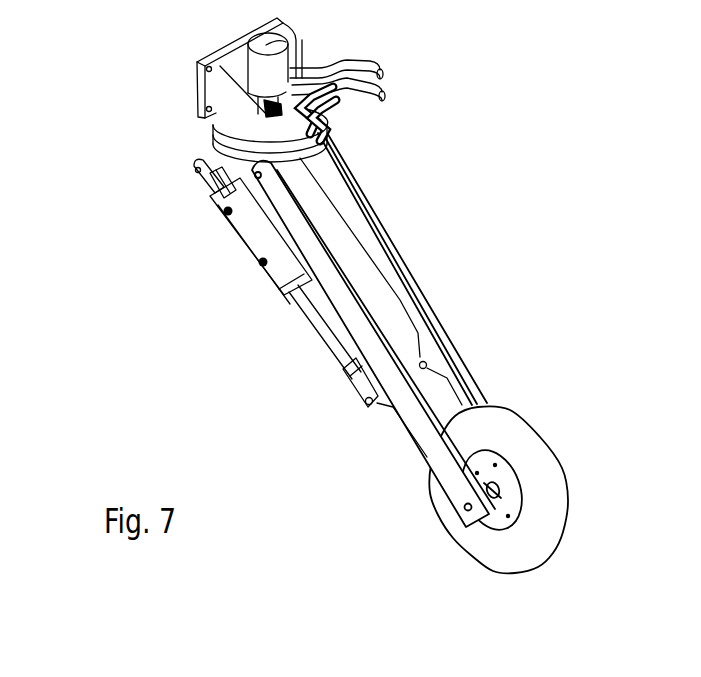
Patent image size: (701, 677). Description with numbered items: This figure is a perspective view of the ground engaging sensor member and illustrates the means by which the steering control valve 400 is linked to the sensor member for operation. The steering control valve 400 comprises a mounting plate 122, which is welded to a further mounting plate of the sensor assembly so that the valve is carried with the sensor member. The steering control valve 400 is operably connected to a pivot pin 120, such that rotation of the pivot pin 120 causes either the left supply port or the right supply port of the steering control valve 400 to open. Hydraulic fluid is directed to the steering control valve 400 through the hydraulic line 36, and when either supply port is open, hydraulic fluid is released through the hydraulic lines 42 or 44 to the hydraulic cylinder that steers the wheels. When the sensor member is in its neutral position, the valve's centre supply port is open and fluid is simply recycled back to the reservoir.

The hydraulic line 36 is at (273, 228).
The hydraulic line 42 is at (380, 60).
The hydraulic line 44 is at (362, 90).
The pivot pin 120 is at (243, 163).
The mounting plate 122 is at (200, 108).
The steering control valve 400 is at (290, 39).